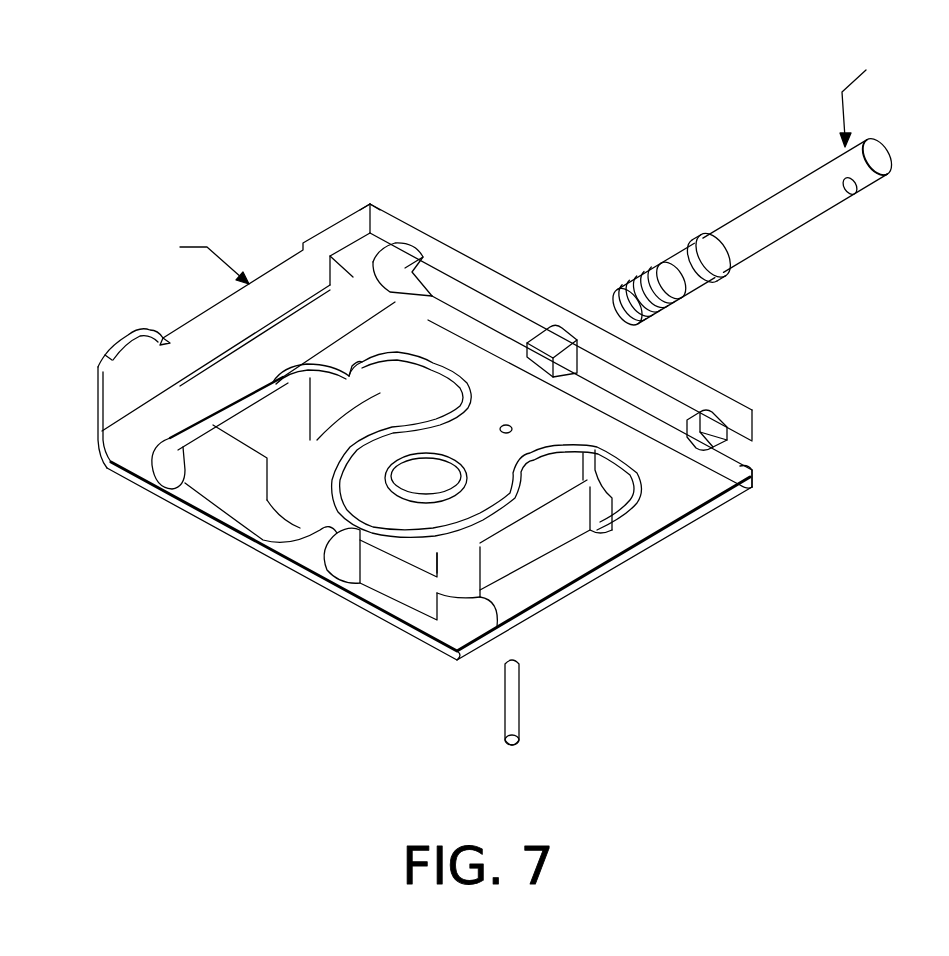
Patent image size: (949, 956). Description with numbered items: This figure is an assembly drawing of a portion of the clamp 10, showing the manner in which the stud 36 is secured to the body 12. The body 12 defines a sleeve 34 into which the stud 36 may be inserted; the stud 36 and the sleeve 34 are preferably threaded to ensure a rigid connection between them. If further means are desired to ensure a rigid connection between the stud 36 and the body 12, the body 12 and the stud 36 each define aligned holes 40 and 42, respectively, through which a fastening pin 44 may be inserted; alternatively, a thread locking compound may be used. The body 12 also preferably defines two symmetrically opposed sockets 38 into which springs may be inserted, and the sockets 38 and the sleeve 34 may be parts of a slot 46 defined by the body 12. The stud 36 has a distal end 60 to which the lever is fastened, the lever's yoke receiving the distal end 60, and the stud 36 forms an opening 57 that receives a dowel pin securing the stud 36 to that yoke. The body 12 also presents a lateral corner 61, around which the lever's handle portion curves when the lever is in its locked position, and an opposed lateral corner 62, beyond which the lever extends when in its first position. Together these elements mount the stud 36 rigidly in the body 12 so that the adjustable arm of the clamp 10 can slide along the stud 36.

The clamp 10 is at (222, 629).
The body 12 is at (98, 461).
The sleeve 34 is at (543, 347).
The stud 36 is at (806, 172).
The sockets 38 is at (403, 272).
The hole 40 is at (514, 427).
The hole 42 is at (667, 310).
The fastening pin 44 is at (508, 702).
The slot 46 is at (468, 303).
The opening 57 is at (848, 198).
The distal end 60 is at (878, 181).
The lateral corner 61 is at (348, 226).
The opposed lateral corner 62 is at (742, 490).